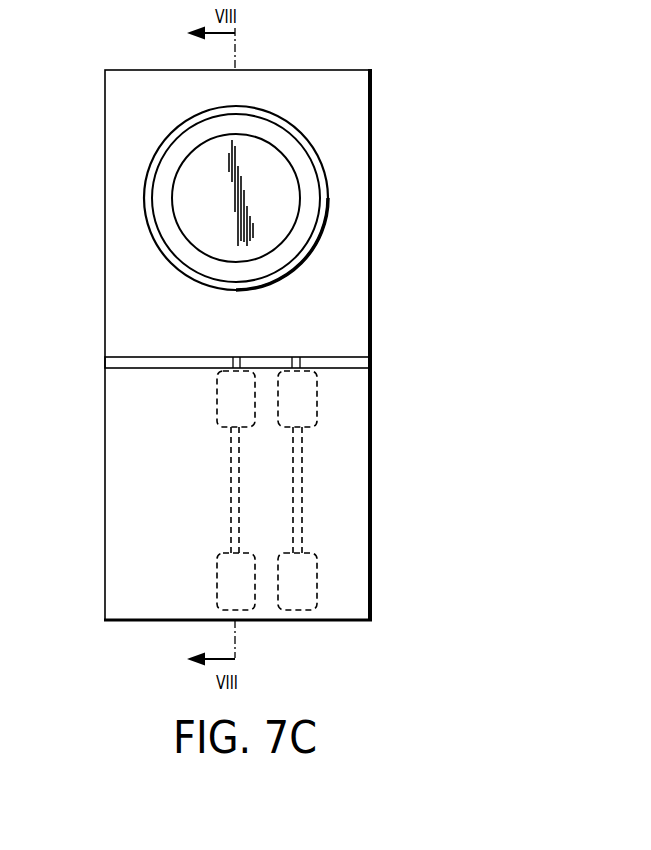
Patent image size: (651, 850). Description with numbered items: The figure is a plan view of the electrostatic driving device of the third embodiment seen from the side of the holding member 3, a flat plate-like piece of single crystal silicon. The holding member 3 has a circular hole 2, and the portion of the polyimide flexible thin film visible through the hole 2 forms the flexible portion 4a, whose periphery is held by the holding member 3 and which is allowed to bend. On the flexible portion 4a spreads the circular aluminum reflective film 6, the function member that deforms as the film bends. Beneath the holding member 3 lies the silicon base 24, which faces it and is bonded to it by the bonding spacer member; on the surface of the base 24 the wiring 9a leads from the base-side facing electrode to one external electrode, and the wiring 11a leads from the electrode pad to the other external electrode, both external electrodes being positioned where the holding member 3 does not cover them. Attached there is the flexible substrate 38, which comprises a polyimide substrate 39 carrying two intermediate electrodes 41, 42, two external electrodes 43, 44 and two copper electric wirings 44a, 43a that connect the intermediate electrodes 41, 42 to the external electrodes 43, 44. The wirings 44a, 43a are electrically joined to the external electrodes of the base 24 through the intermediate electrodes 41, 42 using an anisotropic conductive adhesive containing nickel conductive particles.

The holding member 3 is at (346, 70).
The hole 2 is at (173, 262).
The flexible portion 4a is at (288, 142).
The reflective film 6 is at (283, 196).
The base 24 is at (105, 366).
The wiring 11a is at (228, 357).
The wiring 9a is at (290, 357).
The polyimide substrate 39 is at (363, 378).
The flexible substrate 38 is at (382, 422).
The intermediate electrode 42 is at (228, 411).
The intermediate electrode 41 is at (300, 412).
The electric wiring 44a is at (232, 492).
The electric wiring 43a is at (298, 492).
The external electrode 44 is at (228, 583).
The external electrode 43 is at (302, 583).